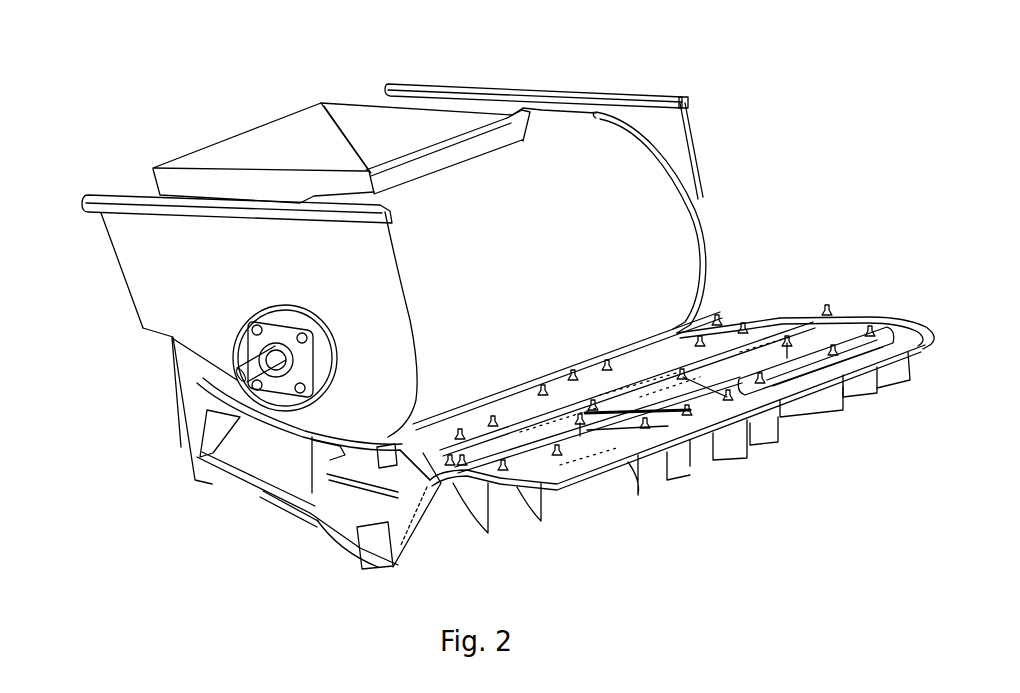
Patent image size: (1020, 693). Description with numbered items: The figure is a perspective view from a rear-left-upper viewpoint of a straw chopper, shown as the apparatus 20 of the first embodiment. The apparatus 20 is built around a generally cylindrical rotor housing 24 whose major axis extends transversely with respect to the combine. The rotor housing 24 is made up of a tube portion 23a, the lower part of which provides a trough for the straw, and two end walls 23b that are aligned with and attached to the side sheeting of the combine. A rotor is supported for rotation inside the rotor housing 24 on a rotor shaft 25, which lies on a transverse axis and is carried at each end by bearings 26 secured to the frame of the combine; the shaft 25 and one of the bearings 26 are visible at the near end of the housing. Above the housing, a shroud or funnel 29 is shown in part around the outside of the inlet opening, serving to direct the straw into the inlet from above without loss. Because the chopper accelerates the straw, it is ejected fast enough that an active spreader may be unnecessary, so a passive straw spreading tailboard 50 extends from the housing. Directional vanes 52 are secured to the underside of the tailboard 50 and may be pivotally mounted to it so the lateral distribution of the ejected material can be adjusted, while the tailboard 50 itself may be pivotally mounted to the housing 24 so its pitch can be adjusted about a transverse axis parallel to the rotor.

The apparatus 20 is at (756, 93).
The tube portion 23a is at (611, 135).
The end walls 23b is at (108, 196).
The rotor housing 24 is at (673, 223).
The rotor shaft 25 is at (238, 377).
The bearings 26 is at (290, 385).
The shroud or funnel 29 is at (257, 128).
The tailboard 50 is at (802, 316).
The directional vanes 52 is at (617, 477).